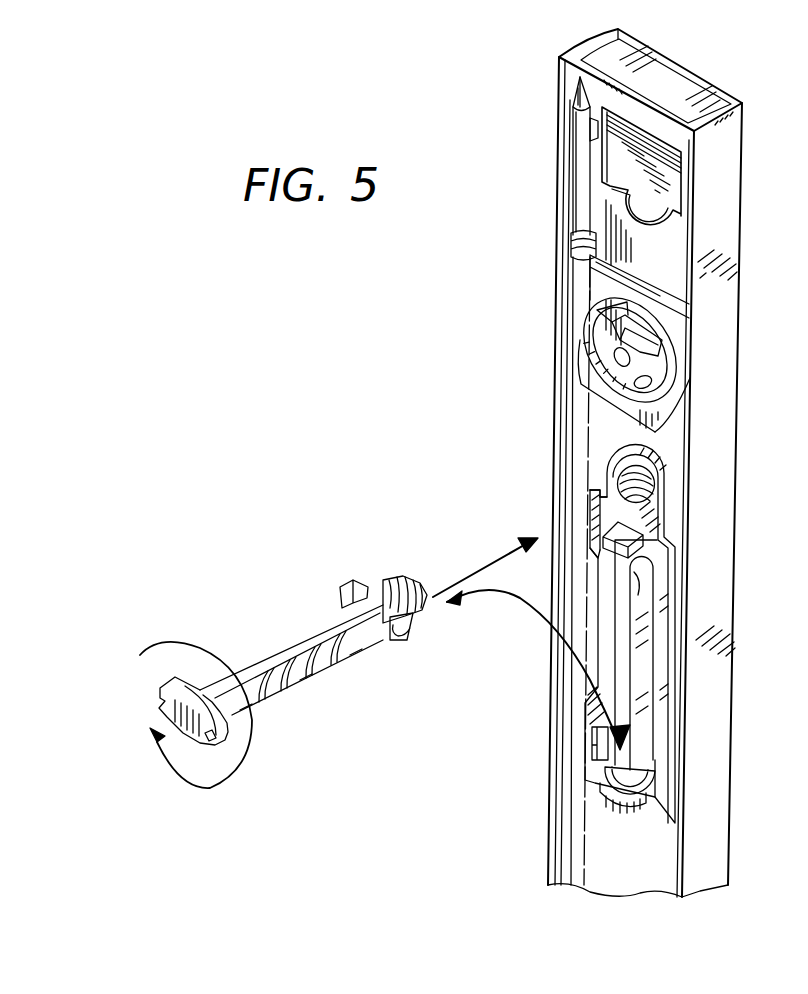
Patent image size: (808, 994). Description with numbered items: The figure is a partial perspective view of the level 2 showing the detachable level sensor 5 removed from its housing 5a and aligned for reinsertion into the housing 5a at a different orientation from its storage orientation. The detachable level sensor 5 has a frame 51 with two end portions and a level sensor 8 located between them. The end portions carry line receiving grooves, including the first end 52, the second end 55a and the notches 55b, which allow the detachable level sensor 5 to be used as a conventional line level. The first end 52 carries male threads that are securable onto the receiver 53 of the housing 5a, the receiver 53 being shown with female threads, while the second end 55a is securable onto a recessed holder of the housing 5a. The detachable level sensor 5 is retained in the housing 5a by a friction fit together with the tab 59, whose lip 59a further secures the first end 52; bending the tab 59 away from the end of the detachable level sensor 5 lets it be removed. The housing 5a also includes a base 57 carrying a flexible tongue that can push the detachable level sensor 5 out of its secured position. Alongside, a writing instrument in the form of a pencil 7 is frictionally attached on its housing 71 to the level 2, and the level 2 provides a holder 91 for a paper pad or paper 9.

The level 2 is at (645, 463).
The detachable level sensor 5 is at (316, 692).
The housing 5a is at (665, 615).
The pencil 7 is at (572, 196).
The housing 71 is at (580, 131).
The level sensor 8 is at (310, 680).
The paper 9 is at (680, 195).
The holder 91 is at (668, 256).
The frame 51 is at (320, 623).
The first end 52 is at (420, 616).
The receiver 53 is at (618, 473).
The second end 55a is at (163, 713).
The notches 55b is at (210, 738).
The base 57 is at (645, 665).
The tab 59 is at (640, 528).
The lip 59a is at (600, 552).